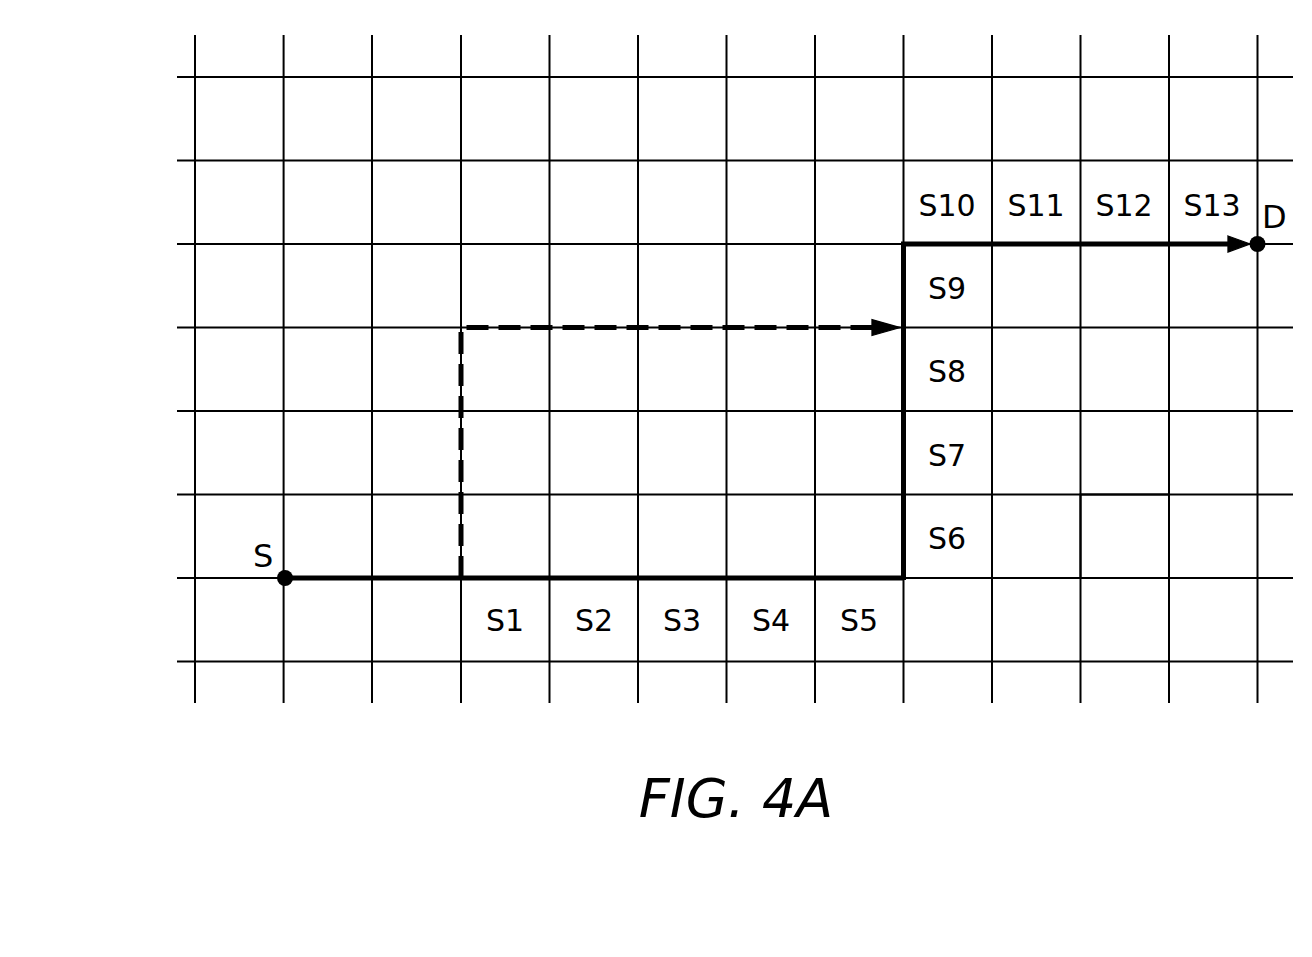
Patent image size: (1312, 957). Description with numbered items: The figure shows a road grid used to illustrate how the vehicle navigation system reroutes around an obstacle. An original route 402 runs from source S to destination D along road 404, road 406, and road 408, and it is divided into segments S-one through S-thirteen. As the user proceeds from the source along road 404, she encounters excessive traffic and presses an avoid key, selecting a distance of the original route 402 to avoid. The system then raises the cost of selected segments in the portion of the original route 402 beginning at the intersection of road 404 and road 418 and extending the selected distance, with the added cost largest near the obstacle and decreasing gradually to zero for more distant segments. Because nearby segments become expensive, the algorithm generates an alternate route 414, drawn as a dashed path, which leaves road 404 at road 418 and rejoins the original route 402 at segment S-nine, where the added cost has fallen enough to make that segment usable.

The original route 402 is at (710, 576).
The road 404 is at (1102, 577).
The road 406 is at (901, 136).
The road 408 is at (710, 242).
The alternate route 414 is at (625, 326).
The road 418 is at (458, 136).